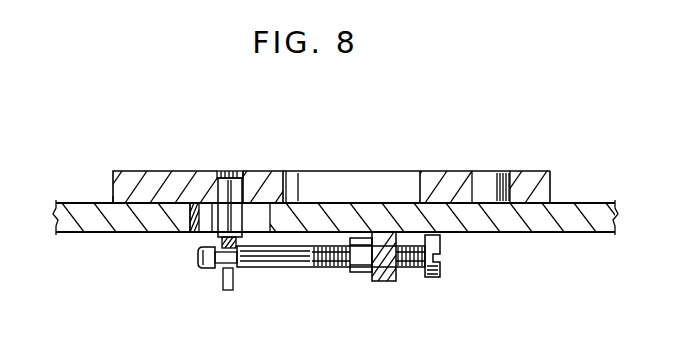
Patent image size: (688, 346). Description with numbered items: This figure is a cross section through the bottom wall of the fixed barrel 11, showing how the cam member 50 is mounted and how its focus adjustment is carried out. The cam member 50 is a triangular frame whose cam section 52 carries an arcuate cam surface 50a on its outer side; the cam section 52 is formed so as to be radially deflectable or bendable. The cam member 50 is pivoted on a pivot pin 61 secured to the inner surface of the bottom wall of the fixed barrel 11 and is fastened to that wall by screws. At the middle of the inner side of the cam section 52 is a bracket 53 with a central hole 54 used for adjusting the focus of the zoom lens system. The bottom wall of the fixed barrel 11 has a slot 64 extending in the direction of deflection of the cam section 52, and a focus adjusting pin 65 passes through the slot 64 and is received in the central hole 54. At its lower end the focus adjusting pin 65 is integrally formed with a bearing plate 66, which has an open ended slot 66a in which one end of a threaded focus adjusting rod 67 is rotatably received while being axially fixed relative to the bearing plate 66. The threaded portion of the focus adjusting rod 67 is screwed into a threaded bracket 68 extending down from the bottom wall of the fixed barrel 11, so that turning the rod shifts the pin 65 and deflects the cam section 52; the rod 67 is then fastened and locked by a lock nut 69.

The fixed barrel 11 is at (541, 228).
The cam member 50 is at (434, 175).
The arcuate cam surface 50a is at (113, 181).
The cam section 52 is at (137, 172).
The bracket 53 is at (273, 177).
The central hole 54 is at (222, 171).
The pivot pin 61 is at (488, 178).
The slot 64 is at (196, 237).
The focus adjusting pin 65 is at (236, 171).
The bearing plate 66 is at (214, 241).
The open ended slot 66a is at (227, 292).
The focus adjusting rod 67 is at (282, 270).
The threaded bracket 68 is at (385, 283).
The lock nut 69 is at (358, 275).